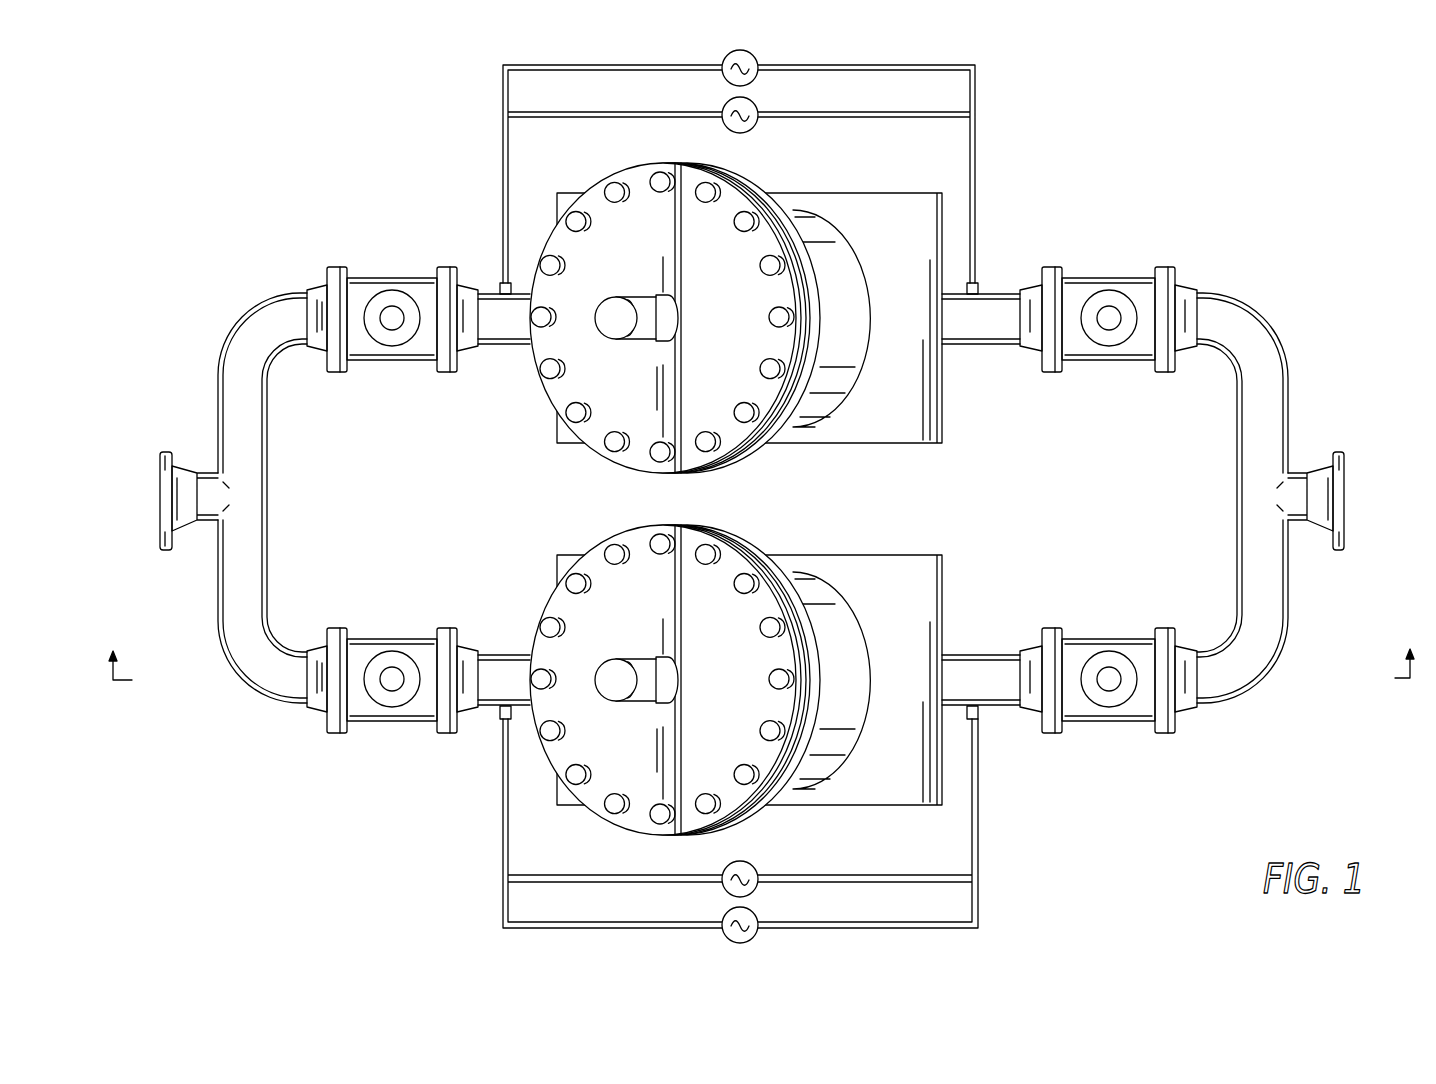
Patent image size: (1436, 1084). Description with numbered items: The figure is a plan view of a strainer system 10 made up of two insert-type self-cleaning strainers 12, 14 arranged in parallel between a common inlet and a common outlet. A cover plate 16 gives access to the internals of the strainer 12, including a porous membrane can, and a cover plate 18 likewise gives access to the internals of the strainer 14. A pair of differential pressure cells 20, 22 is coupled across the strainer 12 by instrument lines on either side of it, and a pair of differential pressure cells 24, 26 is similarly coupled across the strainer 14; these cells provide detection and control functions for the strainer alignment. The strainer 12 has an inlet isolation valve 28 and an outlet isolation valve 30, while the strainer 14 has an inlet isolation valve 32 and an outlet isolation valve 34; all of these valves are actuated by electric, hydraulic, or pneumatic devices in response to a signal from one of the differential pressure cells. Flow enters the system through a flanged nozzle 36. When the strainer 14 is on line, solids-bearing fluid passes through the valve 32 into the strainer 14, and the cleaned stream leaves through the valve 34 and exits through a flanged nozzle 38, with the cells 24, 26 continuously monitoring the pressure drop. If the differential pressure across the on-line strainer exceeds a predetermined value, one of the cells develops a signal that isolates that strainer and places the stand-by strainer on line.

The strainer system 10 is at (762, 496).
The self-cleaning strainer 12 is at (814, 183).
The self-cleaning strainer 14 is at (790, 539).
The cover plate 16 is at (637, 205).
The cover plate 18 is at (640, 793).
The differential pressure cell 20 is at (758, 80).
The differential pressure cell 22 is at (758, 127).
The differential pressure cell 24 is at (757, 918).
The differential pressure cell 26 is at (755, 868).
The inlet isolation valve 28 is at (1108, 270).
The outlet isolation valve 30 is at (405, 363).
The inlet isolation valve 32 is at (1113, 724).
The outlet isolation valve 34 is at (392, 727).
The flanged nozzle 36 is at (1345, 488).
The flanged nozzle 38 is at (160, 472).